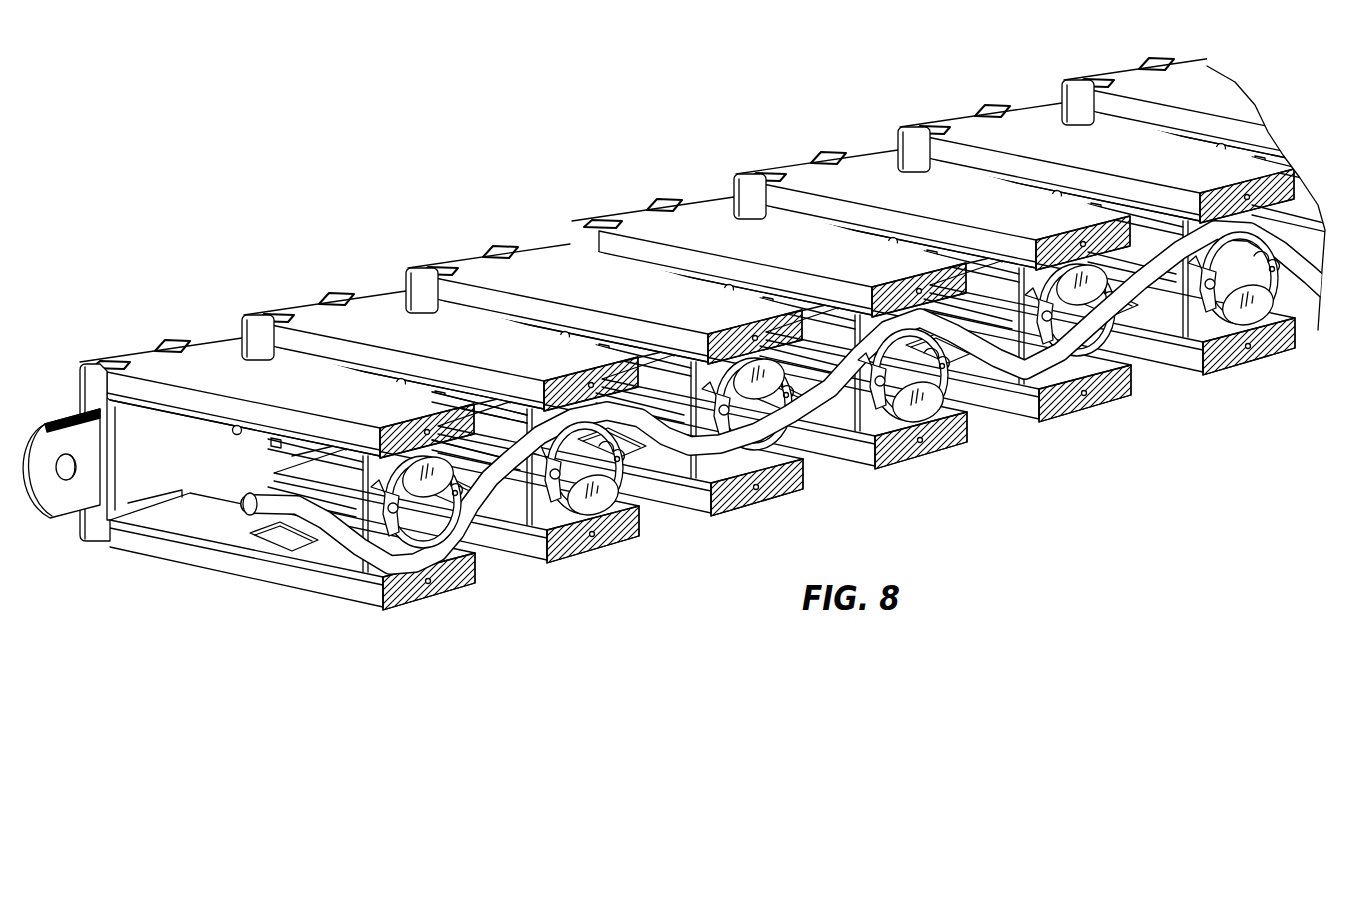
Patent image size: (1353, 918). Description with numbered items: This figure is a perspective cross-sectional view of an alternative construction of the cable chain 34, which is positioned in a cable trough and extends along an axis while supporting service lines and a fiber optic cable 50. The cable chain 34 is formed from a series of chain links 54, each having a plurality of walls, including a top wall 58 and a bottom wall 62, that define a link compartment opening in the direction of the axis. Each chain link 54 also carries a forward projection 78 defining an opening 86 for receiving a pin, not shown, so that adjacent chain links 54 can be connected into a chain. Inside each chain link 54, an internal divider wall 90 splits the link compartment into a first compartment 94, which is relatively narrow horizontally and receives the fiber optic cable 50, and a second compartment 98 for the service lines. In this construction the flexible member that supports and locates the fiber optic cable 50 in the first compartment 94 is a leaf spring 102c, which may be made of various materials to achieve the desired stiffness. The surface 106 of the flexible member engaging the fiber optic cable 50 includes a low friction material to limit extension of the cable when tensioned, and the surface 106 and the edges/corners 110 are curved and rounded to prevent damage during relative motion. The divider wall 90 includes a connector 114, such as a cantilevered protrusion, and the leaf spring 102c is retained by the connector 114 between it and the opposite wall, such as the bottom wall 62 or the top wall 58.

The cable chain 34 is at (612, 120).
The fiber optic cable 50 is at (813, 403).
The chain link 54 is at (359, 390).
The top wall 58 is at (142, 355).
The bottom wall 62 is at (192, 552).
The forward projection 78 is at (69, 470).
The opening 86 is at (68, 482).
The internal divider wall 90 is at (563, 548).
The first compartment 94 is at (383, 568).
The second compartment 98 is at (317, 553).
The leaf spring 102c is at (789, 397).
The surface 106 is at (903, 386).
The edges/corners 110 is at (918, 447).
The connector 114 is at (412, 425).